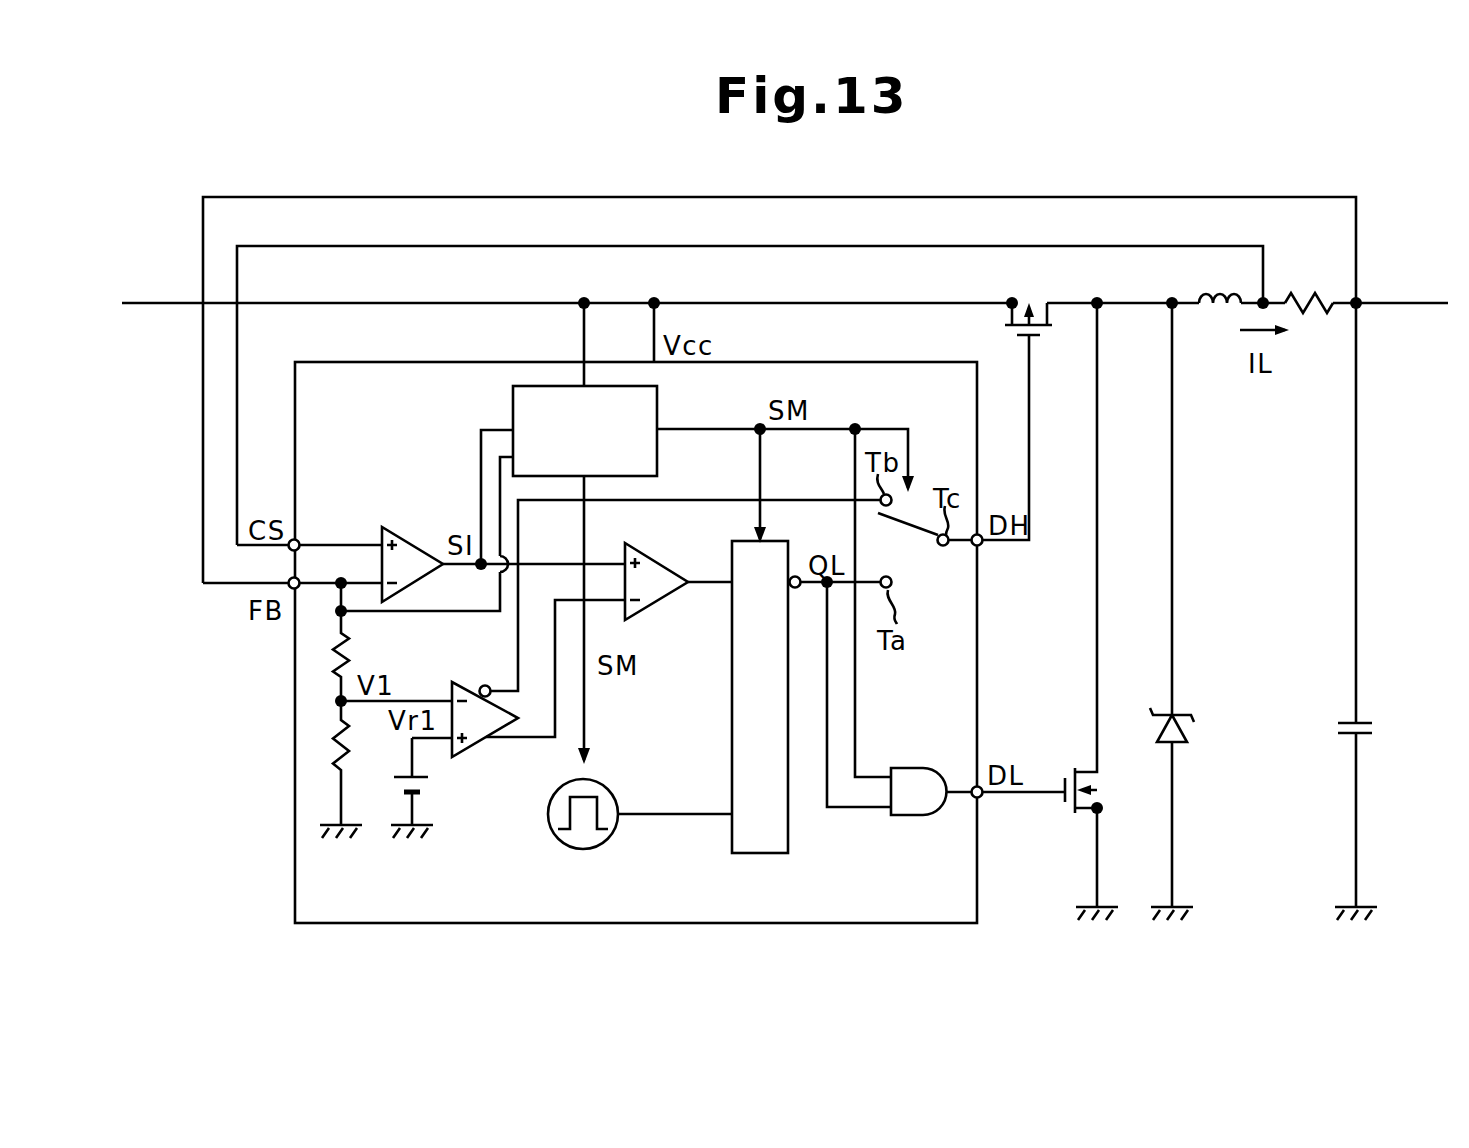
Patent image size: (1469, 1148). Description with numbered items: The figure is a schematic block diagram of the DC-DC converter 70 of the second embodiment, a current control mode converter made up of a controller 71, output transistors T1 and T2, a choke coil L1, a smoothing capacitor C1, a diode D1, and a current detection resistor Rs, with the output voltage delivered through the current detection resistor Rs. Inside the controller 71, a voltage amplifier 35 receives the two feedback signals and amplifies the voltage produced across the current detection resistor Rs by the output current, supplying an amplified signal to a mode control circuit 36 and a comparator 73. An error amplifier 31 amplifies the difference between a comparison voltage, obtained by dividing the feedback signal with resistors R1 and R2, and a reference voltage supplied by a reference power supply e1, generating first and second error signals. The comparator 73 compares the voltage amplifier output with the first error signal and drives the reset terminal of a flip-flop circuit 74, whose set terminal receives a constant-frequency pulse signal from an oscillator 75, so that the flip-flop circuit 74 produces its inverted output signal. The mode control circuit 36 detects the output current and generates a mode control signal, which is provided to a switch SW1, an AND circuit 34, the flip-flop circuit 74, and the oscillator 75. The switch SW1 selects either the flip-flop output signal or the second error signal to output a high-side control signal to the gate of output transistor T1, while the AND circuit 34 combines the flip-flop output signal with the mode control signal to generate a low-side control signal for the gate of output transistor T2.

The DC-DC converter 70 is at (1385, 188).
The controller 71 is at (880, 362).
The mode control circuit 36 is at (659, 405).
The voltage amplifier 35 is at (402, 527).
The error amplifier 31 is at (463, 682).
The comparator 73 is at (665, 566).
The flip-flop circuit 74 is at (763, 545).
The oscillator 75 is at (604, 783).
The AND circuit 34 is at (913, 768).
The output transistor T1 is at (1037, 335).
The output transistor T2 is at (1085, 770).
The choke coil L1 is at (1218, 286).
The current detection resistor Rs is at (1313, 296).
The diode D1 is at (1185, 728).
The smoothing capacitor C1 is at (1338, 726).
The resistor R1 is at (351, 650).
The resistor R2 is at (351, 752).
The reference power supply e1 is at (418, 794).
The switch SW1 is at (918, 536).